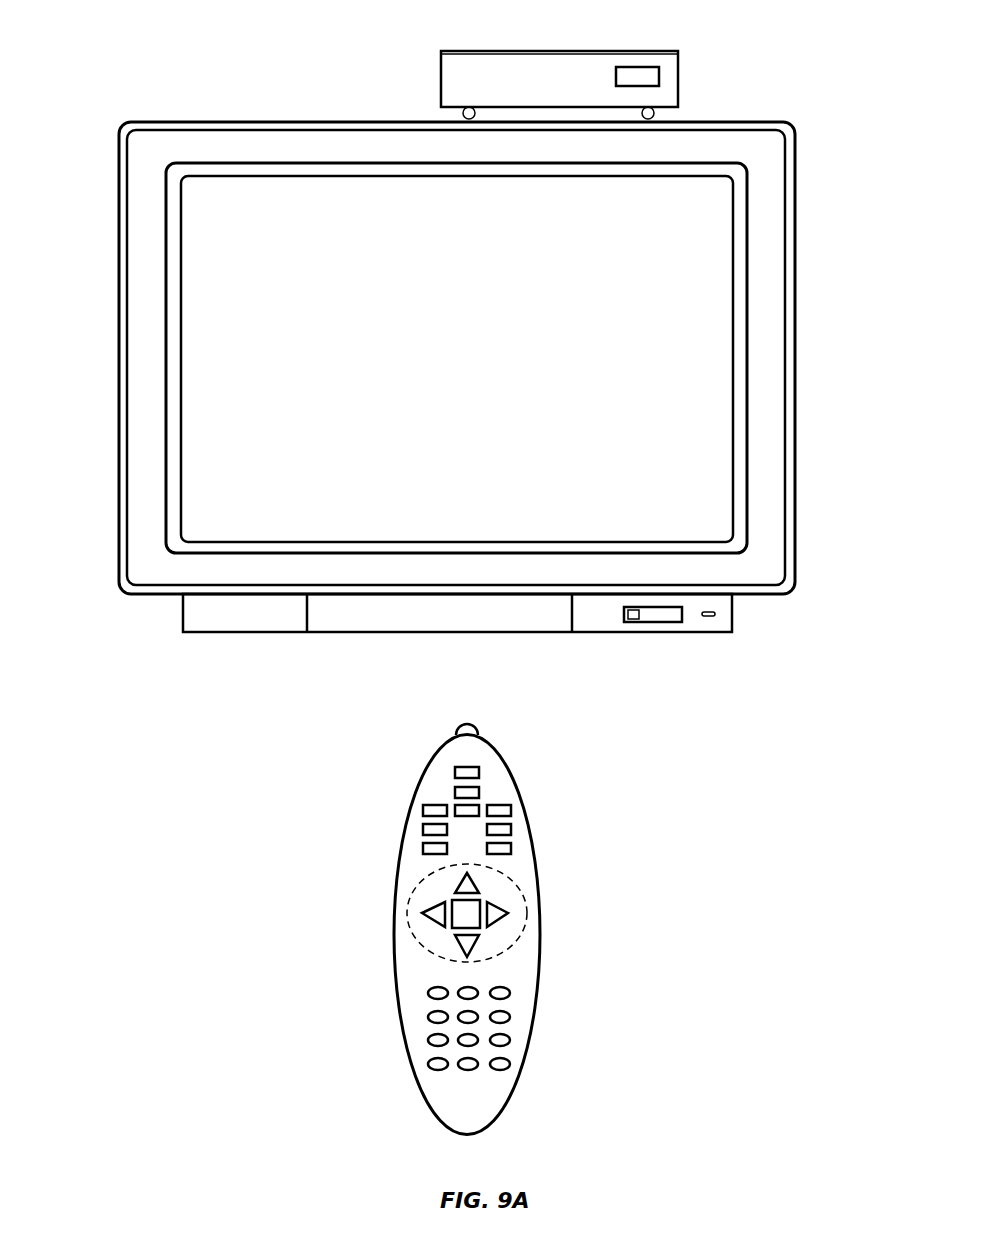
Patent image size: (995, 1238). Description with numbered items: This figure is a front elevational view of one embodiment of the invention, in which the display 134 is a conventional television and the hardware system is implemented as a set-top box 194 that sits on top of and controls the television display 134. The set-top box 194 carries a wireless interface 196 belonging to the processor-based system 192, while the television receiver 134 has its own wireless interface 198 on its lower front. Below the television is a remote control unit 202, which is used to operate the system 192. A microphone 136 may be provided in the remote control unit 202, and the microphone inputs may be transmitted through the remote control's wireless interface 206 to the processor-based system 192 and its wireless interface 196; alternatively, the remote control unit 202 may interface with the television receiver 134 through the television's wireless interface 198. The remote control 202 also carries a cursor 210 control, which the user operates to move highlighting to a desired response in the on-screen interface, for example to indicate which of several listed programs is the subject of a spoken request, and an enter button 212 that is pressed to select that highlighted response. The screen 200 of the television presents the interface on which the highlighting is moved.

The processor-based system 192 is at (459, 349).
The display 134 is at (795, 192).
The display screen 200 is at (709, 386).
The set-top box 194 is at (545, 50).
The wireless interface 196 is at (630, 68).
The wireless interface 198 is at (671, 626).
The remote control unit 202 is at (565, 909).
The wireless interface 206 is at (470, 727).
The microphone 136 is at (497, 803).
The enter button 212 is at (478, 900).
The cursor 210 is at (503, 913).